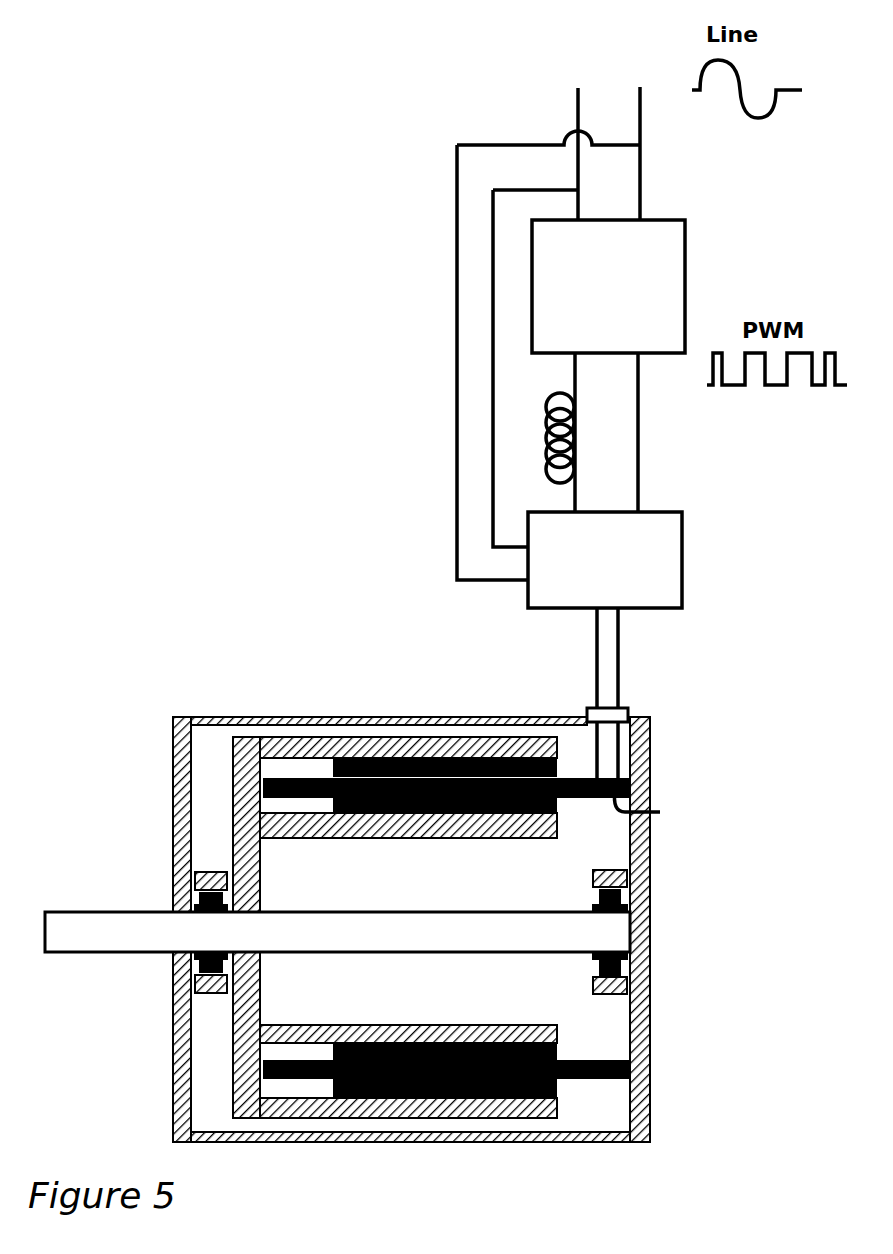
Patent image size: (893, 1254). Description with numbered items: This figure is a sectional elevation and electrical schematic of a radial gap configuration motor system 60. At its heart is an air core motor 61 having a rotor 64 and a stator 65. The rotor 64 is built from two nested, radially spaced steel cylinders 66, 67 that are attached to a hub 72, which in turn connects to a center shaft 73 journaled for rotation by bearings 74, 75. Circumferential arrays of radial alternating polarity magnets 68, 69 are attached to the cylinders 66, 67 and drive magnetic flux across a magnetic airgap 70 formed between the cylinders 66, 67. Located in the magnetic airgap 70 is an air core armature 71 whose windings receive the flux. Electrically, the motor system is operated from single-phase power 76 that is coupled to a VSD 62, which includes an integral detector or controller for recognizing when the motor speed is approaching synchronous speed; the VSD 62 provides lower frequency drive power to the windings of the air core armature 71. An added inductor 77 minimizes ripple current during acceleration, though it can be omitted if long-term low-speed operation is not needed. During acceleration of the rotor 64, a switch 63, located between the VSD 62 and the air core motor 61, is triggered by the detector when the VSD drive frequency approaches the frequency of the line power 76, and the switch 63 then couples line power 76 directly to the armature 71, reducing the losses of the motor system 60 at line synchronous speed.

The radial gap configuration motor system 60 is at (191, 128).
The air core motor 61 is at (220, 695).
The VSD 62 is at (685, 297).
The switch 63 is at (682, 562).
The rotor 64 is at (200, 773).
The stator 65 is at (466, 897).
The steel cylinder 66 is at (405, 838).
The steel cylinder 67 is at (305, 745).
The radial alternating polarity magnets 68 is at (465, 745).
The radial alternating polarity magnets 69 is at (484, 838).
The magnetic airgap 70 is at (572, 810).
The air core armature 71 is at (655, 806).
The hub 72 is at (262, 985).
The center shaft 73 is at (388, 953).
The bearing 74 is at (652, 896).
The bearing 75 is at (190, 883).
The single-phase power 76 is at (599, 80).
The inductor 77 is at (582, 427).